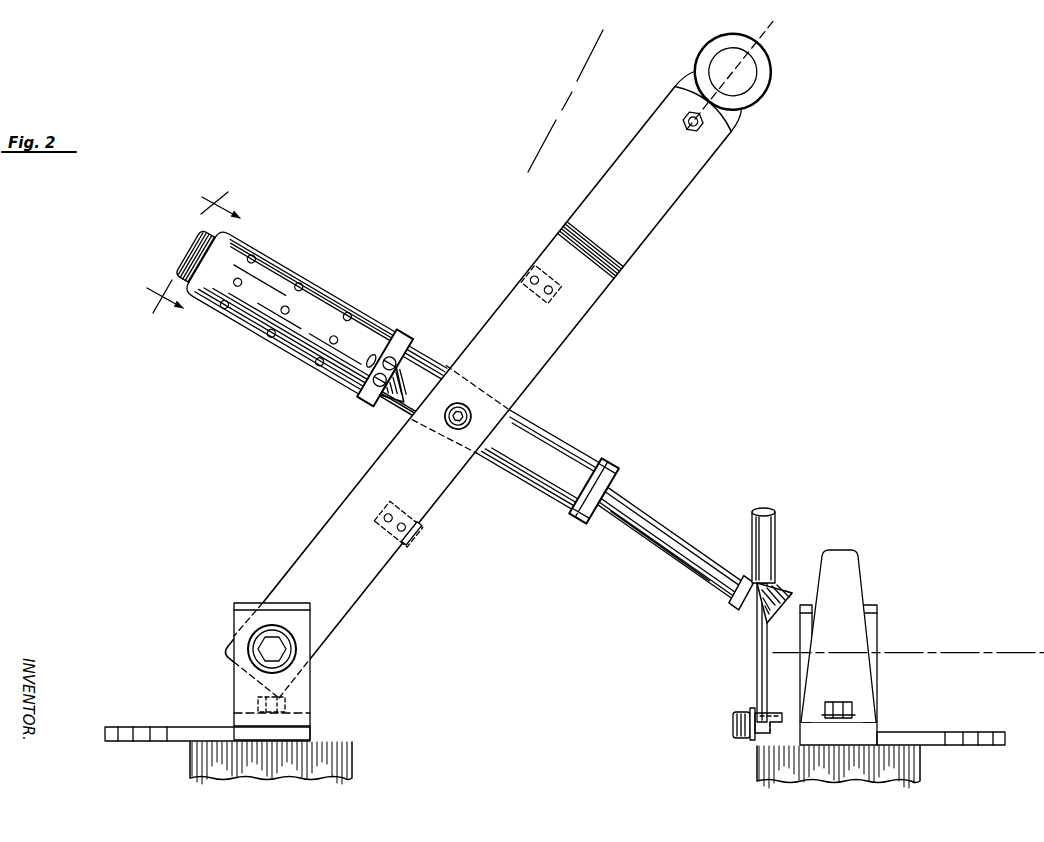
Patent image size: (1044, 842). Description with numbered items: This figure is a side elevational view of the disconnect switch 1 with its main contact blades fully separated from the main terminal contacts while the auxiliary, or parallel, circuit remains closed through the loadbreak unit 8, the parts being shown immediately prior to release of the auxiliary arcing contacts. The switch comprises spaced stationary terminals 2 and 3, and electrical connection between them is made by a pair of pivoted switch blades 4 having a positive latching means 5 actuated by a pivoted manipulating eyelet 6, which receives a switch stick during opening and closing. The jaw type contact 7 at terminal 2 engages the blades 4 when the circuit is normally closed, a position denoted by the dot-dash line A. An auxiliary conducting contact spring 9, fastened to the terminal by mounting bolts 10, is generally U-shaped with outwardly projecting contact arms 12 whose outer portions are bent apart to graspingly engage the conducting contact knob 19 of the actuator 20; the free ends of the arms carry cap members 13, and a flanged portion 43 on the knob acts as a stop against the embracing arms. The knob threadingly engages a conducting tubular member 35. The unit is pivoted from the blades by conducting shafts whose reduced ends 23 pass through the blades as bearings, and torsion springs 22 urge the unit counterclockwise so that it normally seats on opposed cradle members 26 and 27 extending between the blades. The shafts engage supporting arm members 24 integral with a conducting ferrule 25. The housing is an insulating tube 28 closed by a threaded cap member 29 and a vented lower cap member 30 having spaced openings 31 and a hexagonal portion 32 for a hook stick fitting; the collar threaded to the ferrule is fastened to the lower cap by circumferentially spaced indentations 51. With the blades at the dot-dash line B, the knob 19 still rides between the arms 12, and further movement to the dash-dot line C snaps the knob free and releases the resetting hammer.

The disconnect switch 1 is at (357, 467).
The stationary terminal 2 is at (970, 731).
The stationary terminal 3 is at (137, 732).
The switch blades 4 is at (552, 330).
The positive latching means 5 is at (878, 610).
The manipulating eyelet 6 is at (762, 78).
The jaw type contact 7 is at (835, 565).
The loadbreak unit 8 is at (388, 412).
The auxiliary conducting contact spring 9 is at (758, 743).
The mounting bolts 10 is at (742, 712).
The contact arms 12 is at (757, 642).
The cap members 13 is at (758, 512).
The conducting contact knob 19 is at (773, 592).
The actuator 20 is at (657, 507).
The torsion spring 22 is at (453, 364).
The reduced ends 23 is at (452, 417).
The supporting arm members 24 is at (408, 372).
The conducting ferrule 25 is at (403, 333).
The cradle member 26 is at (530, 273).
The cradle member 27 is at (417, 537).
The insulating tube 28 is at (540, 452).
The threaded cap member 29 is at (598, 481).
The vented lower cap member 30 is at (277, 295).
The spaced openings 31 is at (348, 315).
The hexagonal portion 32 is at (188, 265).
The conducting tubular member 35 is at (632, 526).
The flanged portion 43 is at (792, 593).
The indentations 51 is at (371, 355).
The dot-dash line A is at (985, 652).
The dot-dash line B is at (772, 32).
The dash-dot line C is at (578, 80).